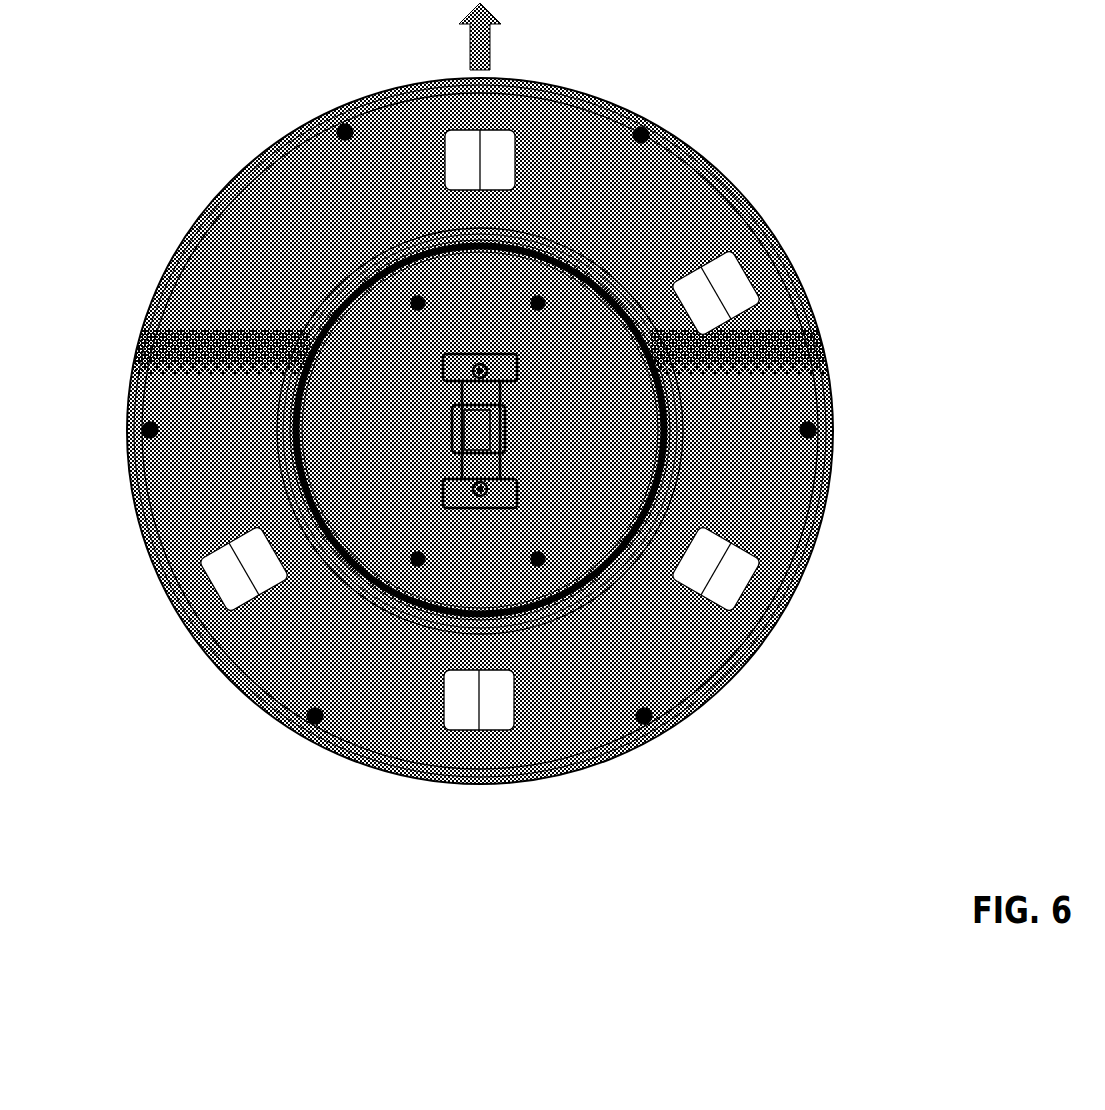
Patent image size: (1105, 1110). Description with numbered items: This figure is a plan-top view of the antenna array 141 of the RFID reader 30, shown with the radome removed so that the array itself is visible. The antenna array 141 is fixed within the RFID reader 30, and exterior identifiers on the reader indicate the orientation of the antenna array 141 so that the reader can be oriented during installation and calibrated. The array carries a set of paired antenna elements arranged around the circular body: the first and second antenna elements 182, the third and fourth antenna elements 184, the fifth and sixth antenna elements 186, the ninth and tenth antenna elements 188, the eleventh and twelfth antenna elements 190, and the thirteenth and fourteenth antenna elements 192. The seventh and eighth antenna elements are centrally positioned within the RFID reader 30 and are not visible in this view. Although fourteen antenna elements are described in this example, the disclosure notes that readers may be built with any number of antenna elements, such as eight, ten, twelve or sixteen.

The RFID reader 30 is at (254, 706).
The antenna array 141 is at (792, 337).
The first and second antenna elements 182 is at (214, 286).
The third and fourth antenna elements 184 is at (490, 128).
The fifth and sixth antenna elements 186 is at (726, 281).
The ninth and tenth antenna elements 188 is at (718, 582).
The eleventh and twelfth antenna elements 190 is at (465, 728).
The thirteenth and fourteenth antenna elements 192 is at (226, 585).